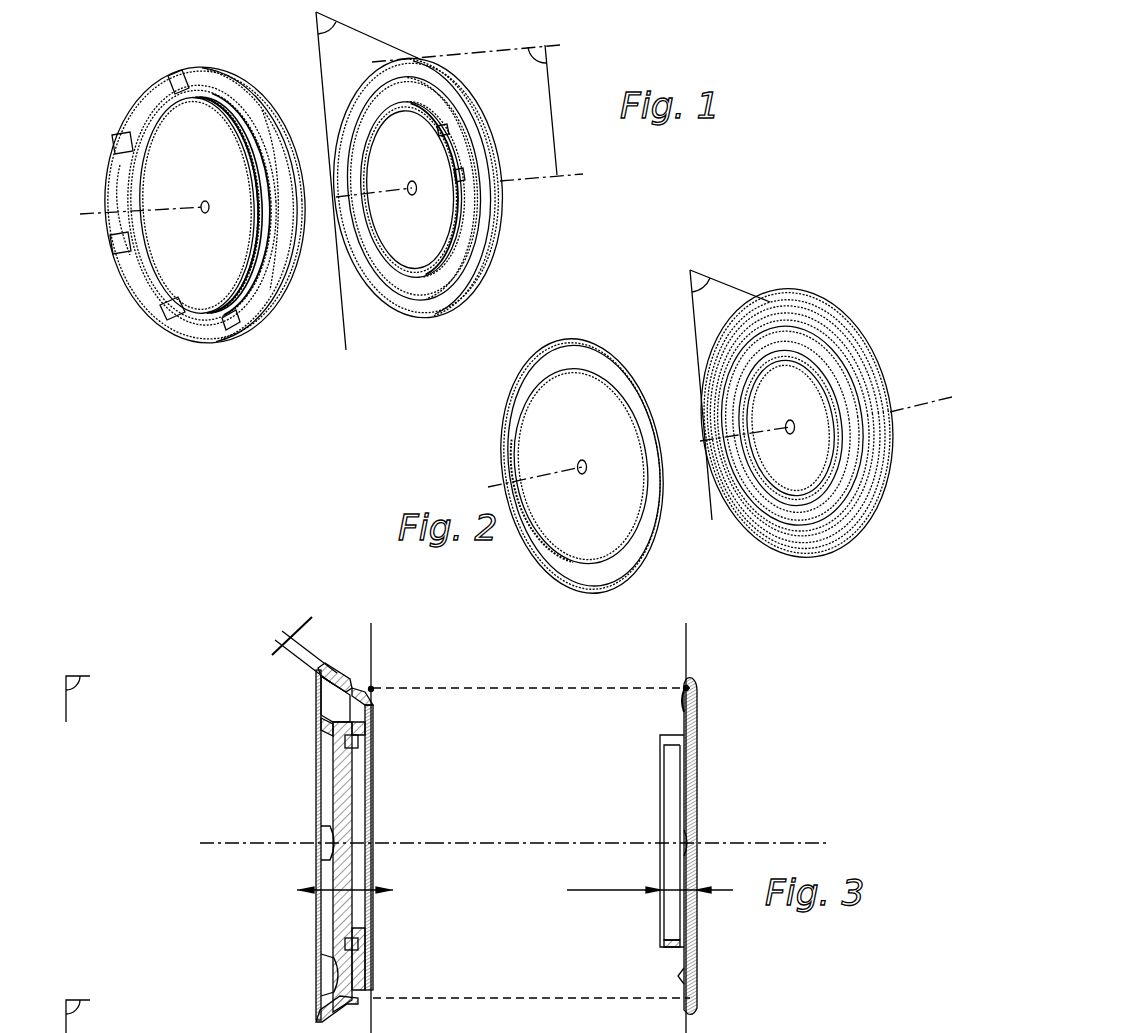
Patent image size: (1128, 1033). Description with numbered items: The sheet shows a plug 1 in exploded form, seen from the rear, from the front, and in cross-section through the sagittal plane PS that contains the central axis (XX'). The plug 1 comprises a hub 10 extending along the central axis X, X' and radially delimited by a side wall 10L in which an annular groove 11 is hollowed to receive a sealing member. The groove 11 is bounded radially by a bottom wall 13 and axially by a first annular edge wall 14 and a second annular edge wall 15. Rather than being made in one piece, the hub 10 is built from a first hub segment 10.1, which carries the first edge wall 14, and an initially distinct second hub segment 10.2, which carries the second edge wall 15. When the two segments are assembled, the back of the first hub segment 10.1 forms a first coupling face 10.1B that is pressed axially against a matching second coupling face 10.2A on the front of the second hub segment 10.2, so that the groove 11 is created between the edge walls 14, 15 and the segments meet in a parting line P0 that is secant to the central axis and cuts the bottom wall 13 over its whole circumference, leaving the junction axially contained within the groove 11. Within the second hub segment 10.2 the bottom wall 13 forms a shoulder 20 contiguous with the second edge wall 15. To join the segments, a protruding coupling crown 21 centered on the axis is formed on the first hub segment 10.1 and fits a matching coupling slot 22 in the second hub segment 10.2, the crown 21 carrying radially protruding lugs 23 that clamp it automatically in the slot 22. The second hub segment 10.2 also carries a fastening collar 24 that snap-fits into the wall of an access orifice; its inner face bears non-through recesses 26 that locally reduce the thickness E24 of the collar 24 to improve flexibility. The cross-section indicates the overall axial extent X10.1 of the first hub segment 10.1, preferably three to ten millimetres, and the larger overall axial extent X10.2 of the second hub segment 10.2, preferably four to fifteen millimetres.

In FIG. 1, the plug 1 is at (106, 76).
In FIG. 2, the plug 1 is at (888, 248).
In FIG. 3, the plug 1 is at (155, 668).
In FIG. 3, the hub 10 is at (337, 640).
In FIG. 1, the first hub segment 10.1 is at (445, 328).
In FIG. 2, the first hub segment 10.1 is at (565, 335).
In FIG. 3, the first hub segment 10.1 is at (702, 696).
In FIG. 1, the first coupling face 10.1B is at (382, 298).
In FIG. 2, the first coupling face 10.1B is at (665, 543).
In FIG. 3, the first coupling face 10.1B is at (656, 795).
In FIG. 1, the second hub segment 10.2 is at (200, 352).
In FIG. 2, the second hub segment 10.2 is at (864, 548).
In FIG. 3, the second hub segment 10.2 is at (258, 730).
In FIG. 1, the second coupling face 10.2A is at (293, 296).
In FIG. 2, the second coupling face 10.2A is at (795, 522).
In FIG. 3, the second coupling face 10.2A is at (378, 775).
In FIG. 3, the side wall 10L is at (347, 672).
In FIG. 3, the annular groove 11 is at (363, 686).
In FIG. 1, the bottom wall 13 is at (286, 150).
In FIG. 2, the bottom wall 13 is at (815, 342).
In FIG. 3, the bottom wall 13 is at (373, 703).
In FIG. 1, the first annular edge wall 14 is at (490, 235).
In FIG. 3, the first annular edge wall 14 is at (682, 673).
In FIG. 2, the second annular edge wall 15 is at (776, 306).
In FIG. 3, the second annular edge wall 15 is at (337, 684).
In FIG. 2, the shoulder 20 is at (800, 316).
In FIG. 3, the shoulder 20 is at (360, 1005).
In FIG. 1, the coupling crown 21 is at (450, 245).
In FIG. 3, the coupling crown 21 is at (664, 945).
In FIG. 2, the coupling slot 22 is at (812, 504).
In FIG. 3, the coupling slot 22 is at (357, 945).
In FIG. 1, the lugs 23 is at (443, 130).
In FIG. 1, the fastening collar 24 is at (148, 288).
In FIG. 2, the fastening collar 24 is at (880, 468).
In FIG. 3, the fastening collar 24 is at (335, 665).
In FIG. 1, the non-through recesses 26 is at (168, 76).
In FIG. 3, the non-through recesses 26 is at (325, 1006).
In FIG. 3, the thickness of the fastening collar E24 is at (290, 648).
In FIG. 3, the overall axial extent of the first hub segment X10.1 is at (650, 879).
In FIG. 3, the overall axial extent of the second hub segment X10.2 is at (379, 879).
In FIG. 1, the parting line P0 is at (313, 20).
In FIG. 2, the parting line P0 is at (688, 272).
In FIG. 3, the parting line P0 is at (374, 645).
In FIG. 1, the sagittal plane PS is at (552, 55).
In FIG. 3, the sagittal plane PS is at (76, 682).
In FIG. 1, the central axis X is at (541, 163).
In FIG. 2, the central axis X is at (523, 474).
In FIG. 3, the central axis X is at (630, 829).
In FIG. 1, the central axis X' is at (136, 204).
In FIG. 2, the central axis X' is at (924, 392).
In FIG. 3, the central axis X' is at (310, 829).